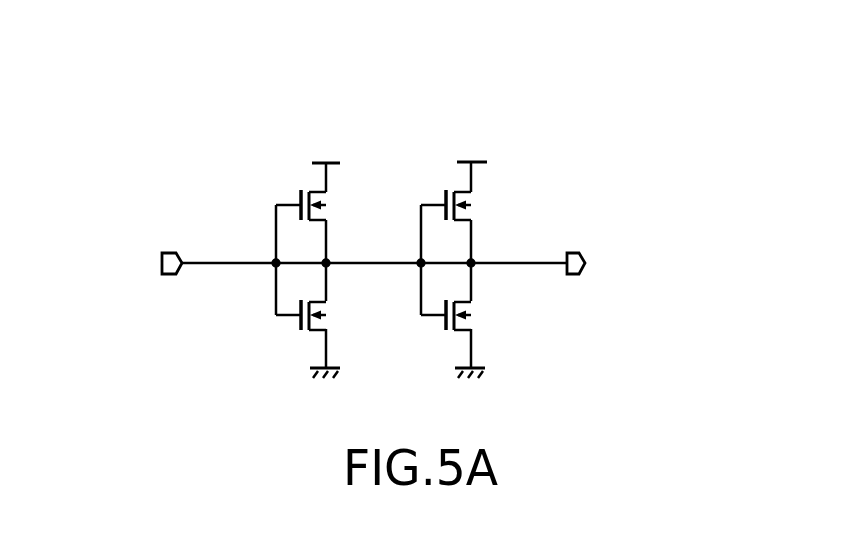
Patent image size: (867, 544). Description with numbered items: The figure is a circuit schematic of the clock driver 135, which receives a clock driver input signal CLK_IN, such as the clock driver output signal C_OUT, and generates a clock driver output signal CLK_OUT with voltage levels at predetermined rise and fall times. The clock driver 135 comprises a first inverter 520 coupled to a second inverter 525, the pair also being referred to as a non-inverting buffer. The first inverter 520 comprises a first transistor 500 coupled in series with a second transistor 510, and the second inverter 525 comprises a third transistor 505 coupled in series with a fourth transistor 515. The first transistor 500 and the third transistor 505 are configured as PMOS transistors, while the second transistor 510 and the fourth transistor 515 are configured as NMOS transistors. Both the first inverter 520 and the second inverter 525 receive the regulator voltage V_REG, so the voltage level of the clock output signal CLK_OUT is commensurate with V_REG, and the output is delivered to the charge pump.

The clock driver 135 is at (203, 163).
The first inverter 520 is at (280, 178).
The second inverter 525 is at (430, 178).
The first transistor 500 is at (318, 205).
The second transistor 510 is at (318, 315).
The third transistor 505 is at (463, 205).
The fourth transistor 515 is at (463, 315).